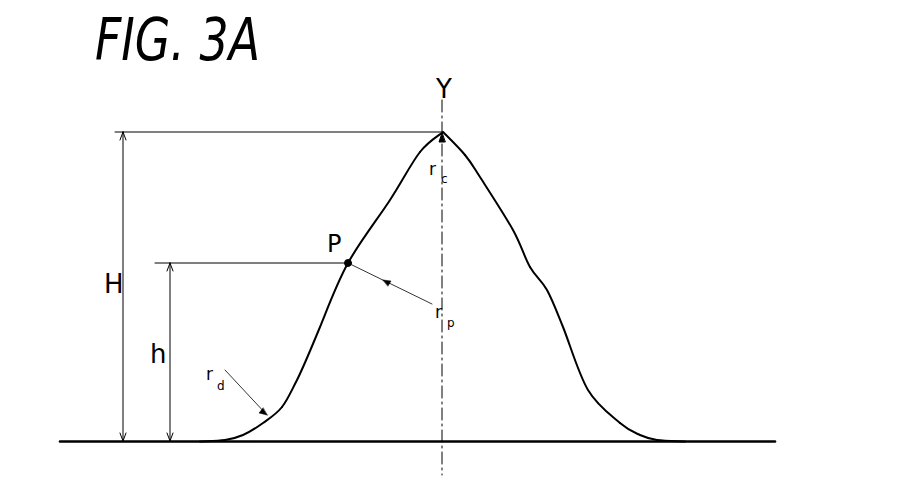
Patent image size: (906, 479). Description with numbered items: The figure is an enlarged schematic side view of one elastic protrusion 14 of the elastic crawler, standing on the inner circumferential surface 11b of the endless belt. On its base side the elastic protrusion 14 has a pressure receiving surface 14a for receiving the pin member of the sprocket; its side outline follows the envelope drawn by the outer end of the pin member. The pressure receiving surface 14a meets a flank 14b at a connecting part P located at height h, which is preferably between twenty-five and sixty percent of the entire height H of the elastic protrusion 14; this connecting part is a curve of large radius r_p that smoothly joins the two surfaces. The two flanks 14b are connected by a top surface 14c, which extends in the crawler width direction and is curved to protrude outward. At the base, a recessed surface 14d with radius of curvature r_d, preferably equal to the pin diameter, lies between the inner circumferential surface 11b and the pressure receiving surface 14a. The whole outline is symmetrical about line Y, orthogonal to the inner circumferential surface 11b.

The inner circumferential surface 11b is at (715, 441).
The elastic protrusion 14 is at (456, 262).
The pressure receiving surface 14a is at (313, 342).
The flank 14b is at (398, 182).
The top surface 14c is at (450, 133).
The recessed surface 14d is at (272, 417).